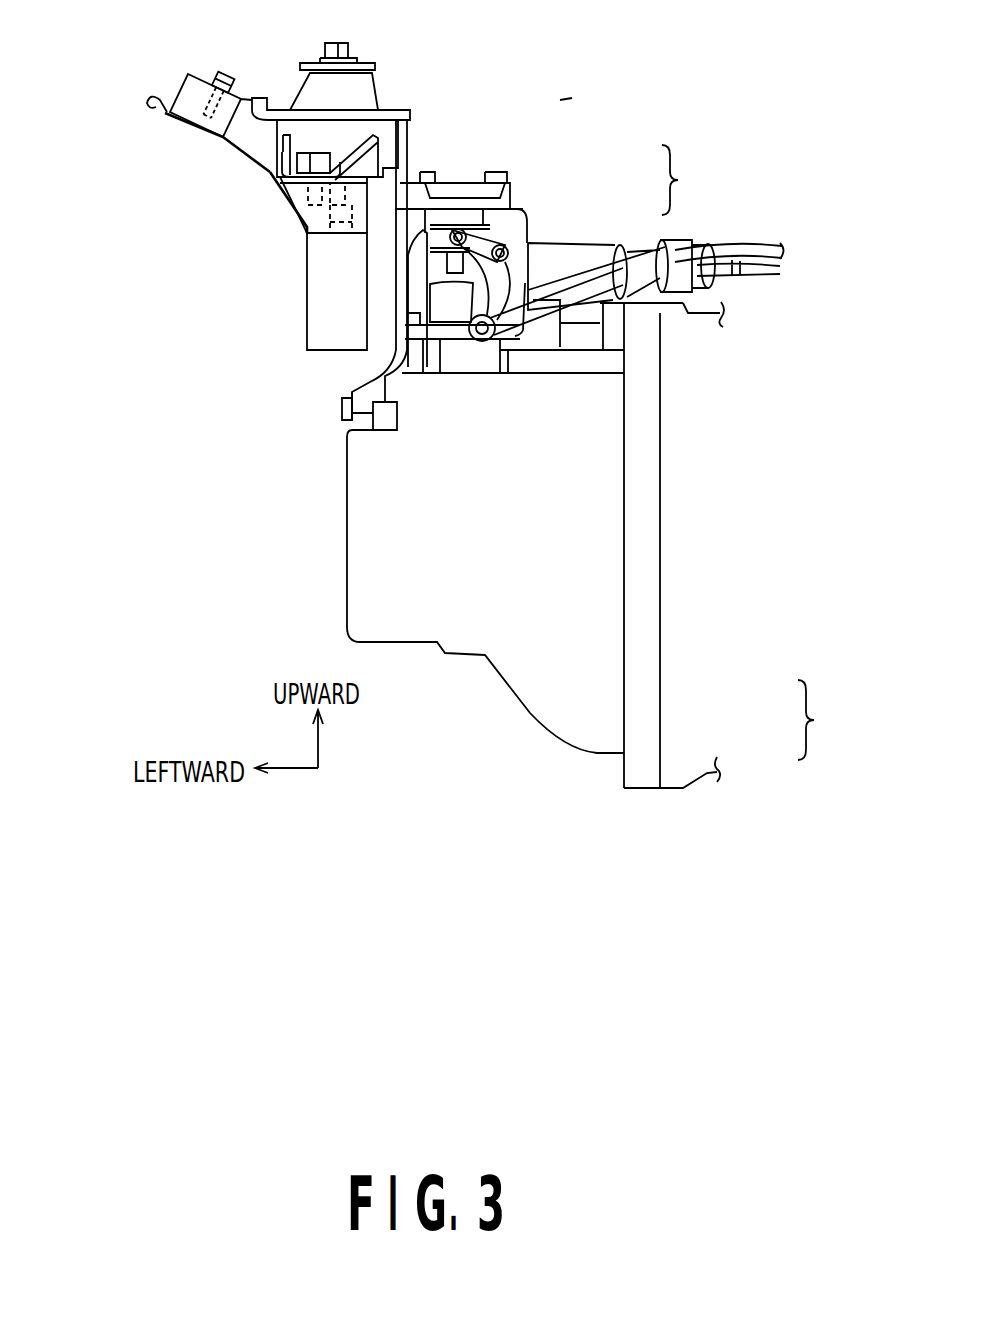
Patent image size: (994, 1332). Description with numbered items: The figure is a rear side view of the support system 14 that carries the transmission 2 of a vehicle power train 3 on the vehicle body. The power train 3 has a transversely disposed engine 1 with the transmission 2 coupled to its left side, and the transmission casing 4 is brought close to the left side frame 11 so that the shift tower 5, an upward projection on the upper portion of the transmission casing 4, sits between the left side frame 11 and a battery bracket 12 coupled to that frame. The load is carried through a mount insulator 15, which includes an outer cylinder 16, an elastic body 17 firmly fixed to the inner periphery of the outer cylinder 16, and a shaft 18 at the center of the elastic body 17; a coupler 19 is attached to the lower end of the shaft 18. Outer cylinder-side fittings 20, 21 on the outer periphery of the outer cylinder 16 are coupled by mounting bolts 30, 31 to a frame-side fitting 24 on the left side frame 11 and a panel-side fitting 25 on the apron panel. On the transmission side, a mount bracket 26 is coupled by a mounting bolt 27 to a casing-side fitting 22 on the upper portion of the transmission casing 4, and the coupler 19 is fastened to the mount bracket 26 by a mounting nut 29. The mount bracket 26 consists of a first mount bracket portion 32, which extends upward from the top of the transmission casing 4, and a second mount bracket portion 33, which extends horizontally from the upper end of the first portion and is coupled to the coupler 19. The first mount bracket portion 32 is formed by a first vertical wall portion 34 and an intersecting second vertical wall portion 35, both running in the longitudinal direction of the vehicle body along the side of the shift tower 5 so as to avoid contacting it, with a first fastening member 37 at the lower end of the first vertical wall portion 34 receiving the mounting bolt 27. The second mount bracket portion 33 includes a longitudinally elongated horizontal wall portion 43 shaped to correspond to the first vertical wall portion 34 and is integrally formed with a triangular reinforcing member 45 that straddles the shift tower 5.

The engine 1 is at (730, 753).
The transmission 2 is at (671, 707).
The power train 3 is at (819, 720).
The transmission casing 4 is at (577, 407).
The shift tower 5 is at (475, 278).
The left side frame 11 is at (347, 272).
The battery bracket 12 is at (147, 113).
The support system 14 is at (576, 87).
The mount insulator 15 is at (417, 89).
The outer cylinder 16 is at (288, 125).
The elastic body 17 is at (313, 93).
The shaft 18 is at (345, 52).
The coupler 19 is at (303, 257).
The outer cylinder-side fitting 20 is at (278, 157).
The outer cylinder-side fitting 21 is at (188, 80).
The casing-side fitting 22 is at (388, 430).
The frame-side fitting 24 is at (292, 198).
The panel-side fitting 25 is at (163, 97).
The mount bracket 26 is at (692, 180).
The mounting bolt 27 is at (340, 408).
The mounting nut 29 is at (303, 228).
The mounting bolt 30 is at (272, 170).
The mounting bolt 31 is at (226, 72).
The first mount bracket portion 32 is at (542, 219).
The second mount bracket portion 33 is at (530, 178).
The first vertical wall portion 34 is at (400, 297).
The second vertical wall portion 35 is at (540, 240).
The first fastening member 37 is at (352, 422).
The horizontal wall portion 43 is at (410, 193).
The reinforcing member 45 is at (465, 190).